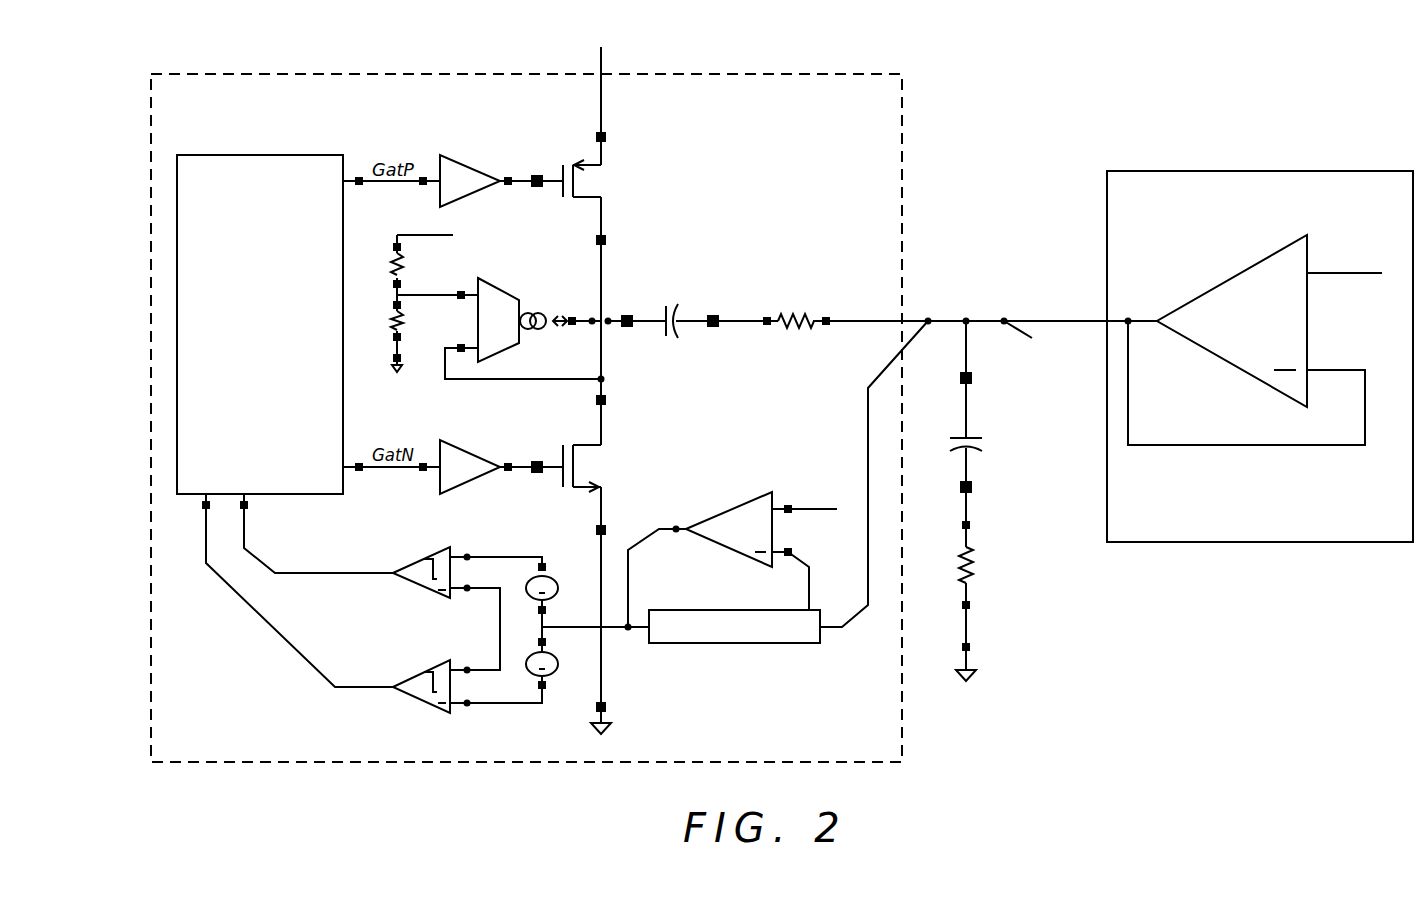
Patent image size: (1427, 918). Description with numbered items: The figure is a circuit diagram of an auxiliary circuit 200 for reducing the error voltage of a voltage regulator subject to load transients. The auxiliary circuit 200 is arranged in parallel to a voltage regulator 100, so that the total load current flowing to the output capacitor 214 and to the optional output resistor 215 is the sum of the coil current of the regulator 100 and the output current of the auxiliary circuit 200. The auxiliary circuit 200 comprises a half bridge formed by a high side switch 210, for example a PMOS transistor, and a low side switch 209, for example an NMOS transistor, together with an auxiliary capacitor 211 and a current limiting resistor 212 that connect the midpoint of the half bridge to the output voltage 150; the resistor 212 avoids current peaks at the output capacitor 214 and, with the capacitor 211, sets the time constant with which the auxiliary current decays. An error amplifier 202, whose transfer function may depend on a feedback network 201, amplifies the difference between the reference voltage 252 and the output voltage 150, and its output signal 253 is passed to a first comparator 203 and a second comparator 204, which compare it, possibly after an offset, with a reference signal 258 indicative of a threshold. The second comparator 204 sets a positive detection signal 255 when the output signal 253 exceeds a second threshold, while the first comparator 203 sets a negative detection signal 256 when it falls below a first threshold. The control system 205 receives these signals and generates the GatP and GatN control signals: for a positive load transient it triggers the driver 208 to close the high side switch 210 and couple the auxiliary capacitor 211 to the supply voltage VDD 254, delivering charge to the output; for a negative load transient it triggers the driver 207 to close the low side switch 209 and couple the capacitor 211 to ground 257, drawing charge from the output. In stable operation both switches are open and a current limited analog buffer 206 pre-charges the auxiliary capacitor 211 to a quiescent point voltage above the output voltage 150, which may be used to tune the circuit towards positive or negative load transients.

The voltage regulator 100 is at (1185, 171).
The output voltage 150 is at (858, 620).
The auxiliary circuit 200 is at (904, 117).
The feedback network 201 is at (708, 608).
The error amplifier 202 is at (732, 508).
The first comparator 203 is at (421, 700).
The second comparator 204 is at (416, 567).
The control system 205 is at (262, 155).
The analog buffer 206 is at (490, 278).
The driver of the low side switch 207 is at (486, 450).
The driver of the high side switch 208 is at (486, 168).
The low side switch 209 is at (612, 457).
The high side switch 210 is at (612, 192).
The auxiliary capacitor 211 is at (670, 304).
The current limiting resistor 212 is at (788, 304).
The output capacitor 214 is at (990, 445).
The output resistor 215 is at (988, 562).
The reference voltage 252 is at (800, 505).
The output signal 253 is at (580, 628).
The supply voltage VDD 254 is at (590, 83).
The positive detection signal 255 is at (336, 573).
The negative detection signal 256 is at (352, 686).
The ground 257 is at (988, 675).
The reference signal 258 is at (500, 628).